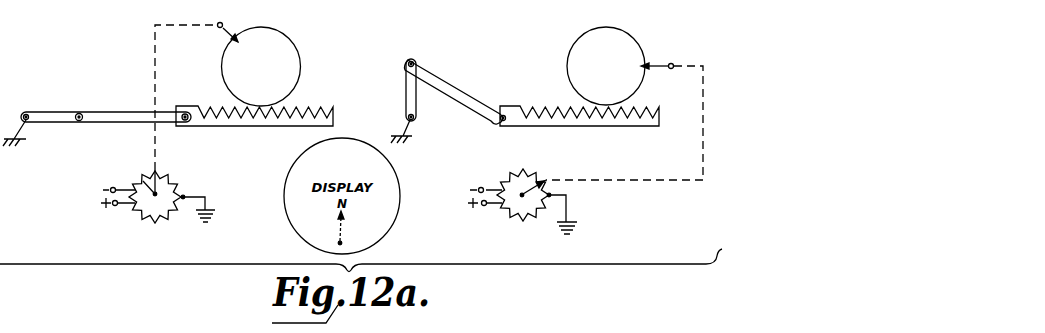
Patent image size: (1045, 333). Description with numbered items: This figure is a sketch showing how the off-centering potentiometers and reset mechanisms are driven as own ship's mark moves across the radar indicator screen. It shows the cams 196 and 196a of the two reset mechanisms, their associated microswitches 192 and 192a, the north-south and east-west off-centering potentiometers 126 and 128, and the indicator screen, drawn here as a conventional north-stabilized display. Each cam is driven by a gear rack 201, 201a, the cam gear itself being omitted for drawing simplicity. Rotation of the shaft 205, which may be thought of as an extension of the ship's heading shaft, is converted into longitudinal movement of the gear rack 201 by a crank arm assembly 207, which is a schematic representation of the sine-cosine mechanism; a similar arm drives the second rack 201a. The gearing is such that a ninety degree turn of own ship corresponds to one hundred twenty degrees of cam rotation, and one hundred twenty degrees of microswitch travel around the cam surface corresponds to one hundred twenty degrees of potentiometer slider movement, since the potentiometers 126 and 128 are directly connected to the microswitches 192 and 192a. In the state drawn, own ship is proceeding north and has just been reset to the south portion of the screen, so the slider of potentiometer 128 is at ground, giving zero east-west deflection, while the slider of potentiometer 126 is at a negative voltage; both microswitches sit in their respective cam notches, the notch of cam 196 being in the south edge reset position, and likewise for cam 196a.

The microswitch 192 is at (243, 14).
The microswitch 192a is at (665, 60).
The cam 196 is at (261, 66).
The cam 196a is at (606, 66).
The rack 201 is at (311, 105).
The rack 201a is at (545, 92).
The shaft 205 is at (27, 115).
The crank arm assembly 207 is at (163, 127).
The north-south off-centering potentiometer 126 is at (170, 215).
The east-west off-centering potentiometer 128 is at (537, 212).